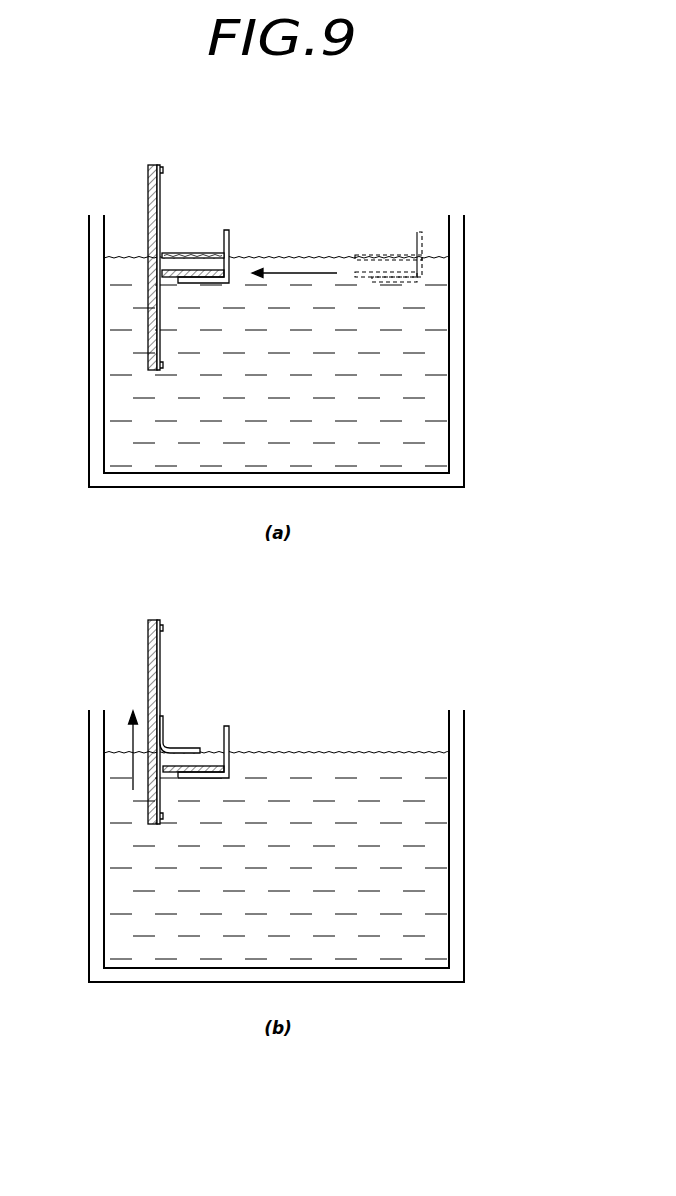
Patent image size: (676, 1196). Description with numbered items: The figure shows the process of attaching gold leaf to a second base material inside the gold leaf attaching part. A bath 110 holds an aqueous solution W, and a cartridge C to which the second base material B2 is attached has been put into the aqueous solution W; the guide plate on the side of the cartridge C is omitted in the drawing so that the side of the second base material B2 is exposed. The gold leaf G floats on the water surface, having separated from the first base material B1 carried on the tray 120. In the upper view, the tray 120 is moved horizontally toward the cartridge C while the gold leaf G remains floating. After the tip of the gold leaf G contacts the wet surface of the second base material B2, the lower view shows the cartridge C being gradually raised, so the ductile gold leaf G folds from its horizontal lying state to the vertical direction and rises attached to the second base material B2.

The bath 110 is at (457, 367).
The tray 120 is at (229, 236).
The aqueous solution W is at (420, 318).
The cartridge C is at (152, 165).
The second base material B2 is at (161, 187).
The first bracket B1 is at (198, 271).
The gold leaf G is at (182, 253).